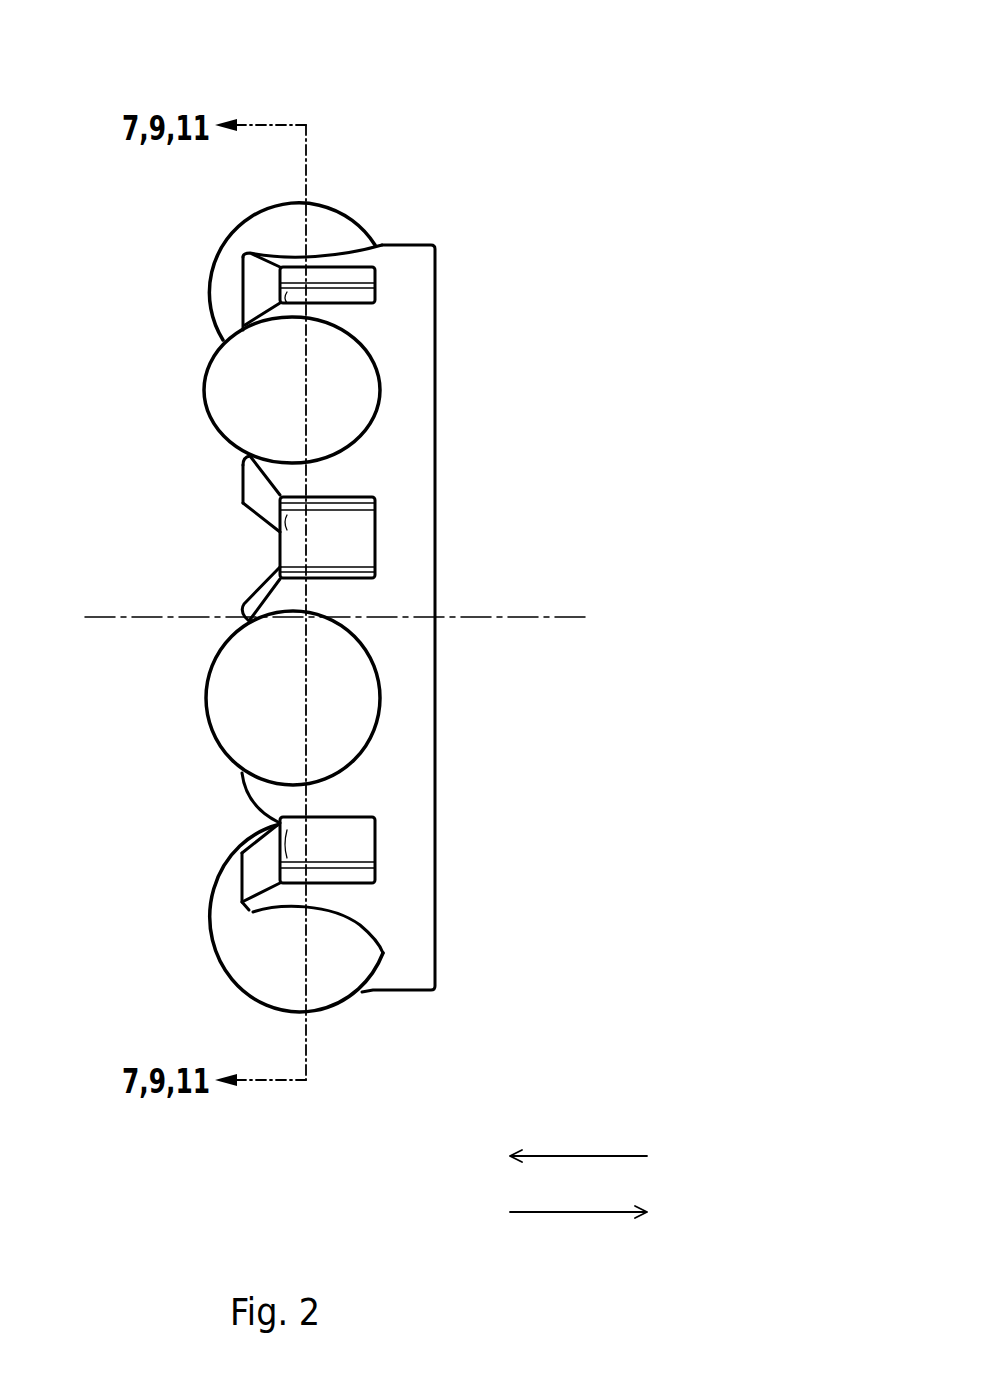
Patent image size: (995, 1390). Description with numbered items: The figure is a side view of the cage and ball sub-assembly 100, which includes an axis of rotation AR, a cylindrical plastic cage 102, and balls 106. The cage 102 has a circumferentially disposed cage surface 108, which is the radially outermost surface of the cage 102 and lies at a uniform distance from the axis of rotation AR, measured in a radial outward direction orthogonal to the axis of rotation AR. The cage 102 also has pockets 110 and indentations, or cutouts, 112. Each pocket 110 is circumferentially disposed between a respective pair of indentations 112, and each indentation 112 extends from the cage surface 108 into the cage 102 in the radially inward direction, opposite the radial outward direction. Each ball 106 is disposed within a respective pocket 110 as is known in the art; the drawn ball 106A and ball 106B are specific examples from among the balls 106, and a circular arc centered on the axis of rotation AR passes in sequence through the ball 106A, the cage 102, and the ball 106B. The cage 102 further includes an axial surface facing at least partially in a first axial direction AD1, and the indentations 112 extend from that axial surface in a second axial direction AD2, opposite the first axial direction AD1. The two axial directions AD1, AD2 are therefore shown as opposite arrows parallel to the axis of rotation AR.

The cage and ball sub-assembly 100 is at (533, 60).
The cylindrical plastic cage 102 is at (412, 234).
The balls 106 is at (205, 273).
The ball 106A is at (205, 713).
The ball 106B is at (205, 912).
The circumferentially disposed cage surface 108 is at (401, 787).
The pockets 110 is at (383, 389).
The indentations 112 is at (297, 550).
The axis of rotation AR is at (542, 618).
The axial direction AD1 is at (552, 1155).
The axial direction AD2 is at (577, 1213).